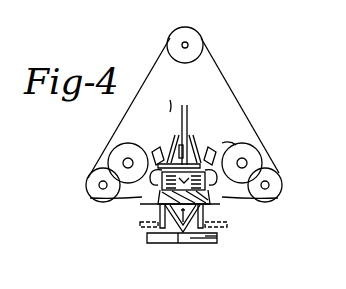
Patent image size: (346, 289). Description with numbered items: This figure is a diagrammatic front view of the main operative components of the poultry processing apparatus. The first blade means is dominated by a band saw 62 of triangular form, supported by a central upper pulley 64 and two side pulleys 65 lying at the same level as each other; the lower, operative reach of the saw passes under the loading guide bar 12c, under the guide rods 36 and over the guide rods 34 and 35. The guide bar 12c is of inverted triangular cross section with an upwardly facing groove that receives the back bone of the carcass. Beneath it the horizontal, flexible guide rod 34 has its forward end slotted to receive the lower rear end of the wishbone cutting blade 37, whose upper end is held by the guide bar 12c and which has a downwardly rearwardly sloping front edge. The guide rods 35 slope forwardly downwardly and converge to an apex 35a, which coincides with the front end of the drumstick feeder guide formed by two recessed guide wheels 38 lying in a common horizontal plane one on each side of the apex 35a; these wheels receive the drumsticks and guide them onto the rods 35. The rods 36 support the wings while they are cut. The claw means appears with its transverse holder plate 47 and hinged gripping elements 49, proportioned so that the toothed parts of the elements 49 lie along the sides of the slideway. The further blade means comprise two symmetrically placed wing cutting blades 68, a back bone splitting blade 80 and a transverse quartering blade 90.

The central upper pulley 64 is at (203, 45).
The band saw 62 is at (242, 101).
The transverse holder plate 47 is at (170, 104).
The back bone splitting blade 80 is at (186, 118).
The wing cutting blades 68 is at (160, 146).
The gripping elements 49 is at (222, 143).
The transverse quartering blade 90 is at (118, 152).
The side pulleys 65 is at (86, 185).
The guide rods 36 is at (142, 200).
The guide bar 12c is at (148, 215).
The guide wheels 38 is at (160, 195).
The guide rods 35 is at (162, 244).
The apex 35a is at (218, 240).
The guide rod 34 is at (183, 232).
The wishbone cutting blade 37 is at (218, 236).